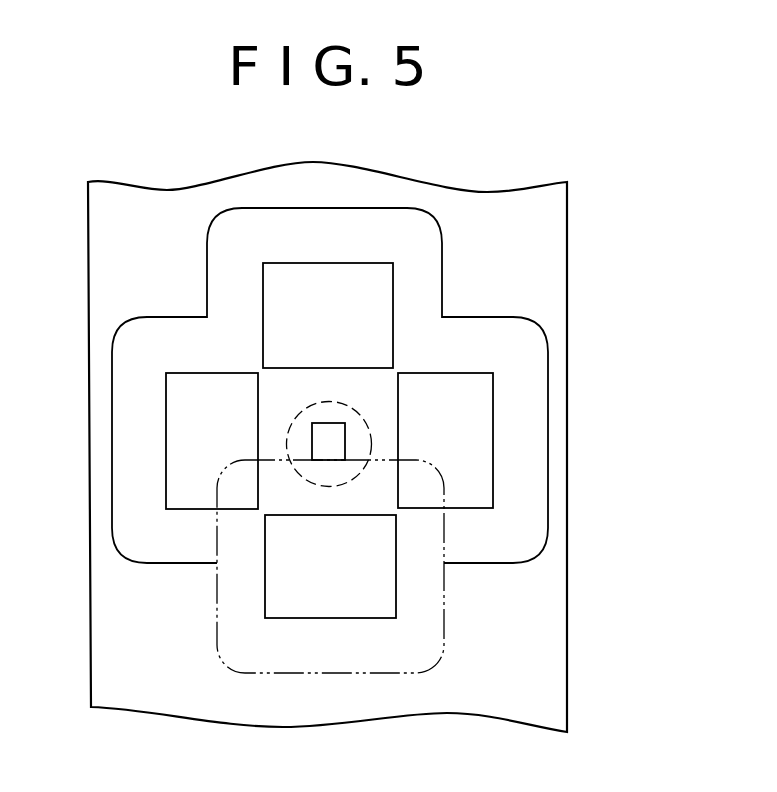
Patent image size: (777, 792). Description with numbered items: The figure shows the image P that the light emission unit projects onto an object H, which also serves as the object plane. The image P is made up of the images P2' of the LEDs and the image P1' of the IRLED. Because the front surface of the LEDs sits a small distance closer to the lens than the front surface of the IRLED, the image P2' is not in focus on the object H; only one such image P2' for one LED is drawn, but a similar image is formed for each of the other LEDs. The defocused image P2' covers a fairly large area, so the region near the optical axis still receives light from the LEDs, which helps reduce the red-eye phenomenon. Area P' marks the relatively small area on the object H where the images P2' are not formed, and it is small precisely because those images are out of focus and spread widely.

The object H is at (545, 223).
The image P is at (293, 385).
The area where images are not formed P' is at (375, 441).
The image of the IRLED P1' is at (368, 432).
The image of the LED P2' is at (424, 566).